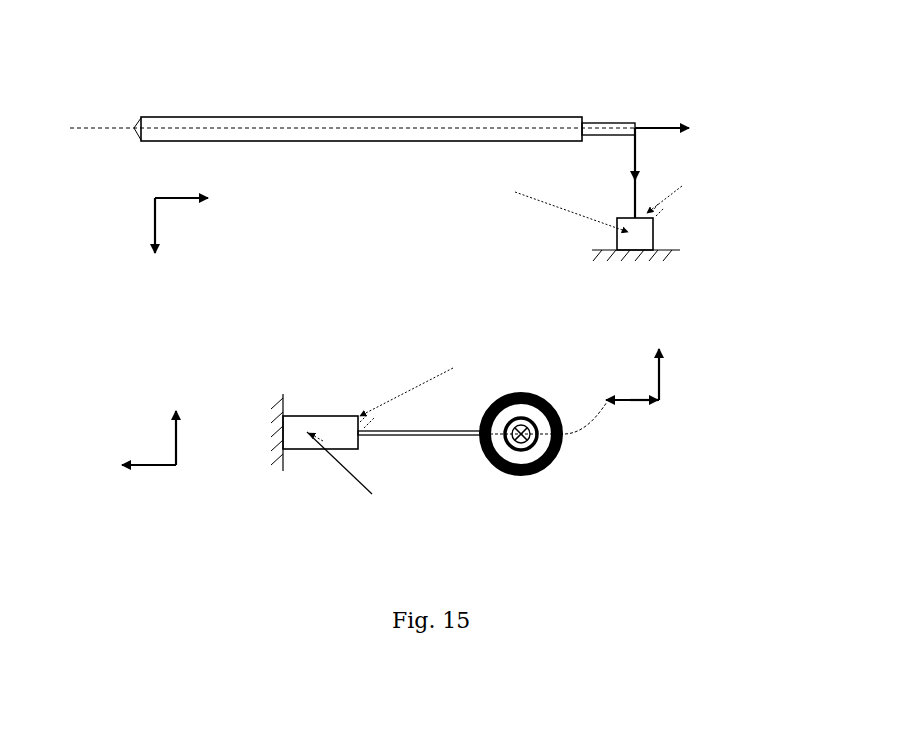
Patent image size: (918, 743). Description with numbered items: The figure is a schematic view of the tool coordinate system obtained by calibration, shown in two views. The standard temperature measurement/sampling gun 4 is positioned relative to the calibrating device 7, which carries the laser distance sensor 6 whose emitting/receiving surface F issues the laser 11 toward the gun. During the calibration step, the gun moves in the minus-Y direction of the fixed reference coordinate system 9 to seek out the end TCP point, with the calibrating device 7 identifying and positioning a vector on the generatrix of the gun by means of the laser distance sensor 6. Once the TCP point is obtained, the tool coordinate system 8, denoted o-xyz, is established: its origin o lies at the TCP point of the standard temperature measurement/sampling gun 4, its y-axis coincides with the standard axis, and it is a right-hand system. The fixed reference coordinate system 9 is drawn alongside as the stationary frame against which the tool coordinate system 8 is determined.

The standard temperature measurement/sampling gun 4 is at (352, 123).
The tool coordinate system 8 is at (638, 124).
The laser 11 is at (640, 194).
The laser distance sensor 6 is at (645, 241).
The calibrating device 7 is at (605, 260).
The fixed reference coordinate system 9 is at (160, 204).